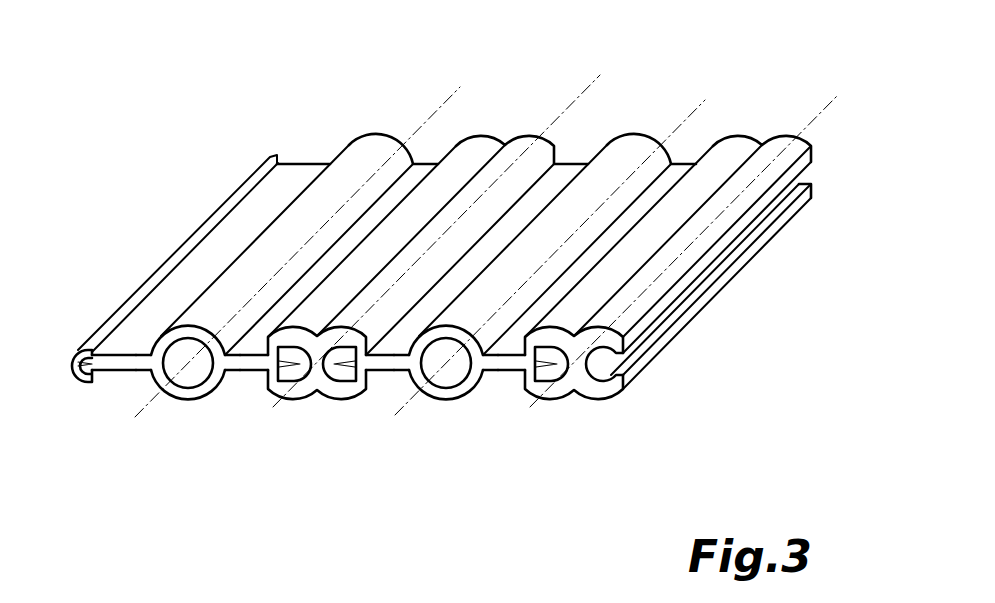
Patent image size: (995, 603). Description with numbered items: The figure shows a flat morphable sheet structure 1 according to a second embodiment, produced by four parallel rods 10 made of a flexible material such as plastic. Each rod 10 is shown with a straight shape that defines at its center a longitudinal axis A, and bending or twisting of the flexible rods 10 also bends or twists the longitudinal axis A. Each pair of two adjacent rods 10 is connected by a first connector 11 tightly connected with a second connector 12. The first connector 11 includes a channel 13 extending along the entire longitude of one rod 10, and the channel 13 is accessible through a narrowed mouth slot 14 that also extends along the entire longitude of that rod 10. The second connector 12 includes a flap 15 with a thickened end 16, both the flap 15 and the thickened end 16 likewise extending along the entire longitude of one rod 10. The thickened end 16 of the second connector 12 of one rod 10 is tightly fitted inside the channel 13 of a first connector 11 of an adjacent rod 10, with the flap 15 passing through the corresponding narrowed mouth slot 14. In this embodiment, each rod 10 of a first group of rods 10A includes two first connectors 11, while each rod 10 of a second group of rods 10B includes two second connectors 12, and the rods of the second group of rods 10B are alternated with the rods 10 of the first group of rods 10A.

The morphable sheet structure 1 is at (180, 80).
The rod 10 is at (377, 148).
The first group of rods 10A is at (626, 56).
The second group of rods 10B is at (386, 56).
The first connector 11 is at (446, 430).
The second connector 12 is at (102, 425).
The channel 13 is at (305, 390).
The narrowed mouth slot 14 is at (292, 392).
The flap 15 is at (135, 371).
The thickened end 16 is at (118, 371).
The longitudinal axis A is at (836, 80).